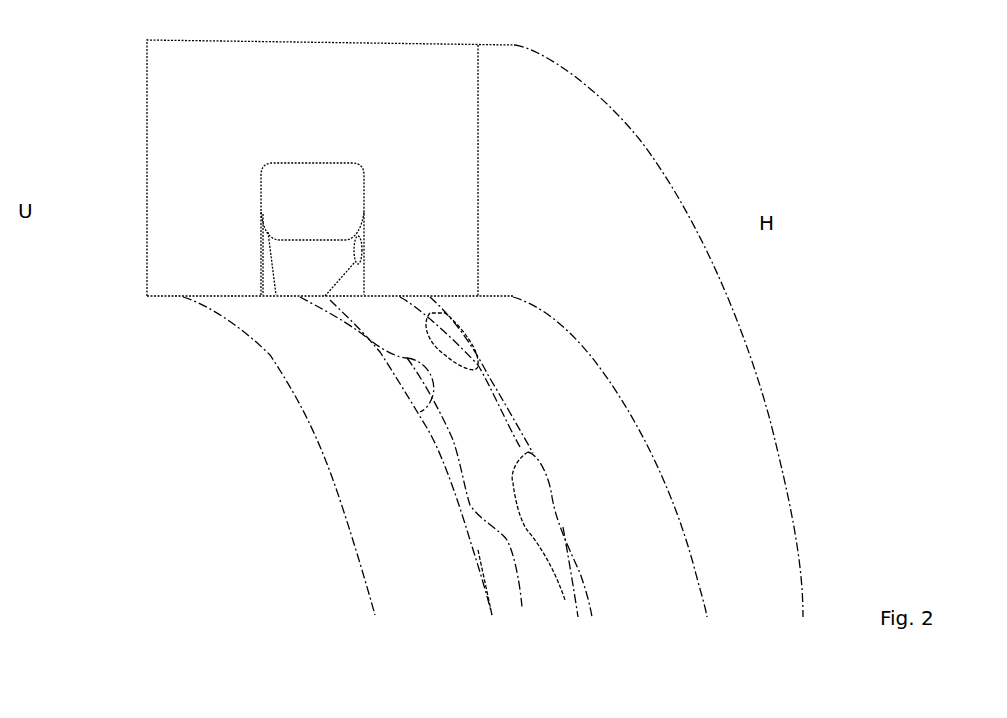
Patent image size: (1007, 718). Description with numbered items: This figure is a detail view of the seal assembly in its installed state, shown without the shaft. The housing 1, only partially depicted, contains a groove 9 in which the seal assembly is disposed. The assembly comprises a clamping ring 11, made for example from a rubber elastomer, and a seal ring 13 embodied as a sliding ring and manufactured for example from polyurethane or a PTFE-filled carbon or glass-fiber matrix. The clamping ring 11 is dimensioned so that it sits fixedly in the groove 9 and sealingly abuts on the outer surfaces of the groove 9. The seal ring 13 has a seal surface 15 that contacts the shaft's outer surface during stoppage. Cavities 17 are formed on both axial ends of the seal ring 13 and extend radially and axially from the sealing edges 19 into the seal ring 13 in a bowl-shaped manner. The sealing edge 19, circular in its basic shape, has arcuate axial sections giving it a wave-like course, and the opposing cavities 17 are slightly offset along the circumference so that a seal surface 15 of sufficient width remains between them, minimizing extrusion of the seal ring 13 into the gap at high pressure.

The housing 1 is at (160, 80).
The groove 9 is at (284, 362).
The clamping ring 11 is at (288, 203).
The seal ring 13 is at (288, 265).
The seal surface 15 is at (487, 465).
The cavities 17 is at (539, 498).
The sealing edges 19 is at (497, 398).